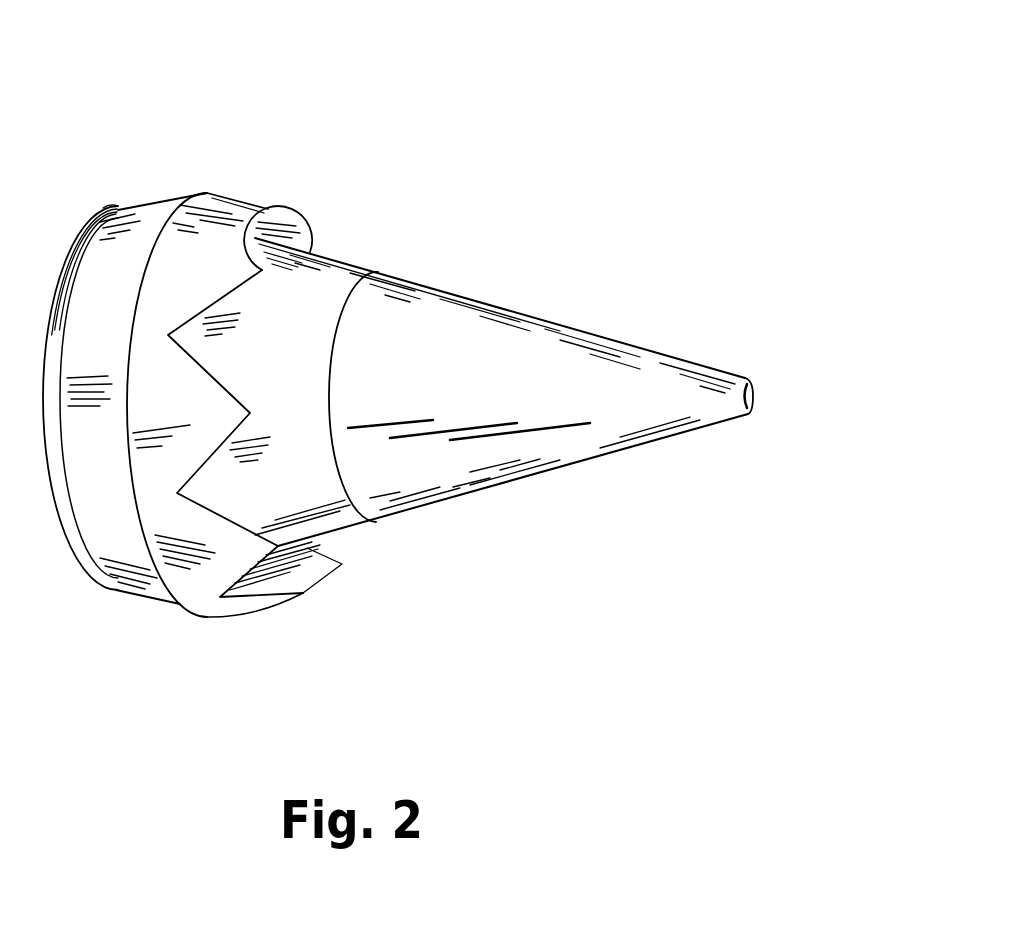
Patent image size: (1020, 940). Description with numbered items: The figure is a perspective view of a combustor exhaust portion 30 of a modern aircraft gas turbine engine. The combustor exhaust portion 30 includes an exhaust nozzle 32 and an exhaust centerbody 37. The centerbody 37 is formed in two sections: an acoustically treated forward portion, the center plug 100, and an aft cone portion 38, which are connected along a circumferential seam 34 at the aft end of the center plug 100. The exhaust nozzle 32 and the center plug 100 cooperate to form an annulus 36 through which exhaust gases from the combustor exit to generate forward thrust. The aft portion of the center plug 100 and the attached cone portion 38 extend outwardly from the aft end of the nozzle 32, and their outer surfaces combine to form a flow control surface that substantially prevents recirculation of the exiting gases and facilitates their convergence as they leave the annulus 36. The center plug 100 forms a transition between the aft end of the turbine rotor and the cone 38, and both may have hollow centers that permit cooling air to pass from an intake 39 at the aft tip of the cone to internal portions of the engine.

The combustor exhaust portion 30 is at (418, 87).
The exhaust nozzle 32 is at (200, 575).
The circumferential seam 34 is at (410, 278).
The annulus 36 is at (283, 233).
The exhaust centerbody 37 is at (520, 517).
The aft cone portion 38 is at (567, 370).
The intake 39 is at (753, 393).
The center plug 100 is at (337, 530).